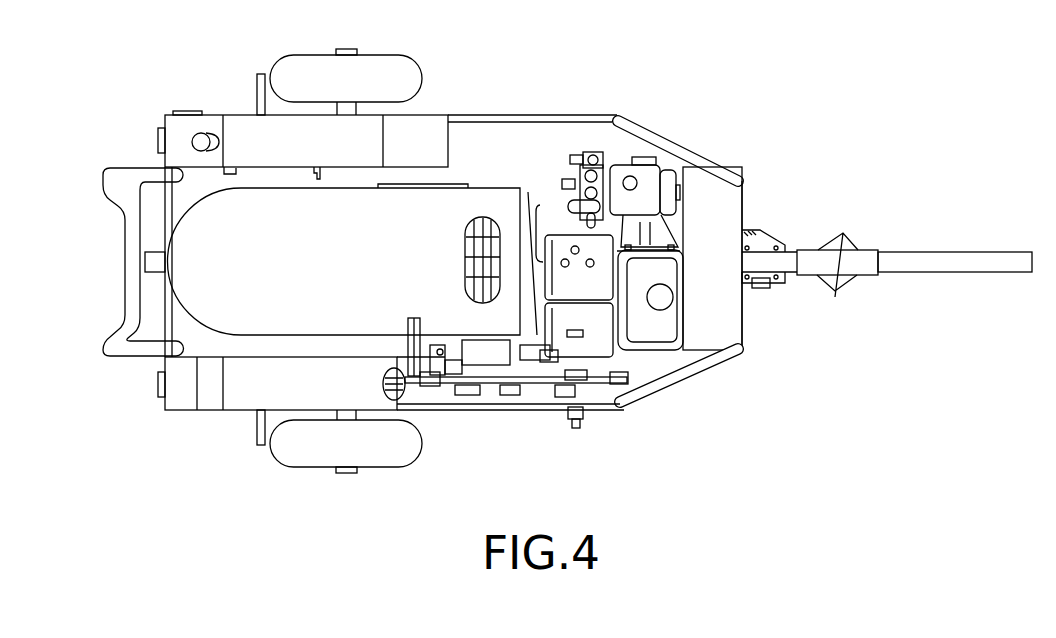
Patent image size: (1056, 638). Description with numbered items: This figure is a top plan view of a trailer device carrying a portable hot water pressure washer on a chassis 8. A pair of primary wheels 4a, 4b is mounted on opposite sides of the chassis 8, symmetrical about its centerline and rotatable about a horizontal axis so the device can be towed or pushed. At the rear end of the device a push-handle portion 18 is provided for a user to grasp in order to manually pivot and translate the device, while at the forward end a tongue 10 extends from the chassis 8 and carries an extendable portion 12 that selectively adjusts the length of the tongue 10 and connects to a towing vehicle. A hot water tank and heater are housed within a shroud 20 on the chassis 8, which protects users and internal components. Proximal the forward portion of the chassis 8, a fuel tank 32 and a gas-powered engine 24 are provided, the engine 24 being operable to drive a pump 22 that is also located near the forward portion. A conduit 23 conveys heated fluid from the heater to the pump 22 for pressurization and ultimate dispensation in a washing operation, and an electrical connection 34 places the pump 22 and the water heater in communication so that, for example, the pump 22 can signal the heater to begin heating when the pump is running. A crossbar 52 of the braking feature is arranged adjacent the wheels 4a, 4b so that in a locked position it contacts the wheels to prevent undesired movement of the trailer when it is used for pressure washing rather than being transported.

The primary wheel 4a is at (386, 72).
The primary wheel 4b is at (386, 458).
The chassis 8 is at (722, 352).
The tongue 10 is at (866, 262).
The extendable portion 12 is at (970, 265).
The push-handle portion 18 is at (124, 348).
The shroud 20 is at (343, 271).
The pump 22 is at (628, 167).
The conduit 23 is at (534, 200).
The engine 24 is at (598, 356).
The fuel tank 32 is at (664, 322).
The electrical connection 34 is at (553, 205).
The crossbar 52 is at (258, 444).